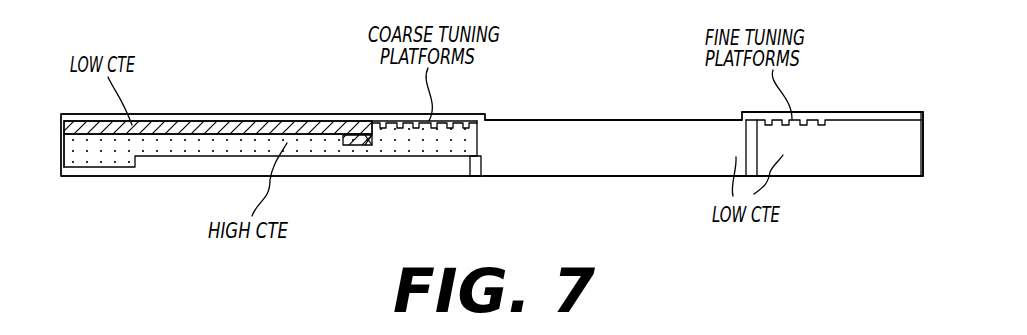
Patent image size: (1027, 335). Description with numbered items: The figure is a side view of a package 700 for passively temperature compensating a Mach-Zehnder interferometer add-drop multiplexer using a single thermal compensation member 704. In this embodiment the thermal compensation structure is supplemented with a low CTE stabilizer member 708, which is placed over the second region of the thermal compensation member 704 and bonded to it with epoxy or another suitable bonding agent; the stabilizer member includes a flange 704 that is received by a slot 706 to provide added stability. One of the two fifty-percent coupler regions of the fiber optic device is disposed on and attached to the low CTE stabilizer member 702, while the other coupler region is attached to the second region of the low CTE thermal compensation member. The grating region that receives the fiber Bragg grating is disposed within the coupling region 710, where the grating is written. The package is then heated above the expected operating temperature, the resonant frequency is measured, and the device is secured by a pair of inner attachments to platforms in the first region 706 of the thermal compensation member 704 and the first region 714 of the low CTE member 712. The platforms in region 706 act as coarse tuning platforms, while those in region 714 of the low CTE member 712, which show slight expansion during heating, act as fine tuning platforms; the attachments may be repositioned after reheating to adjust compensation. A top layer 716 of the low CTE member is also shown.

The tunable assembly 700 is at (861, 58).
The low CTE stabilizer member 702 is at (183, 177).
The thermal compensation member 704 is at (60, 153).
The first region of thermal compensation member 706 is at (408, 114).
The low CTE stabilizer member 708 is at (184, 121).
The coupling region 710 is at (566, 118).
The low CTE member 712 is at (877, 157).
The first region of low CTE member 714 is at (797, 119).
The top layer 716 is at (860, 119).